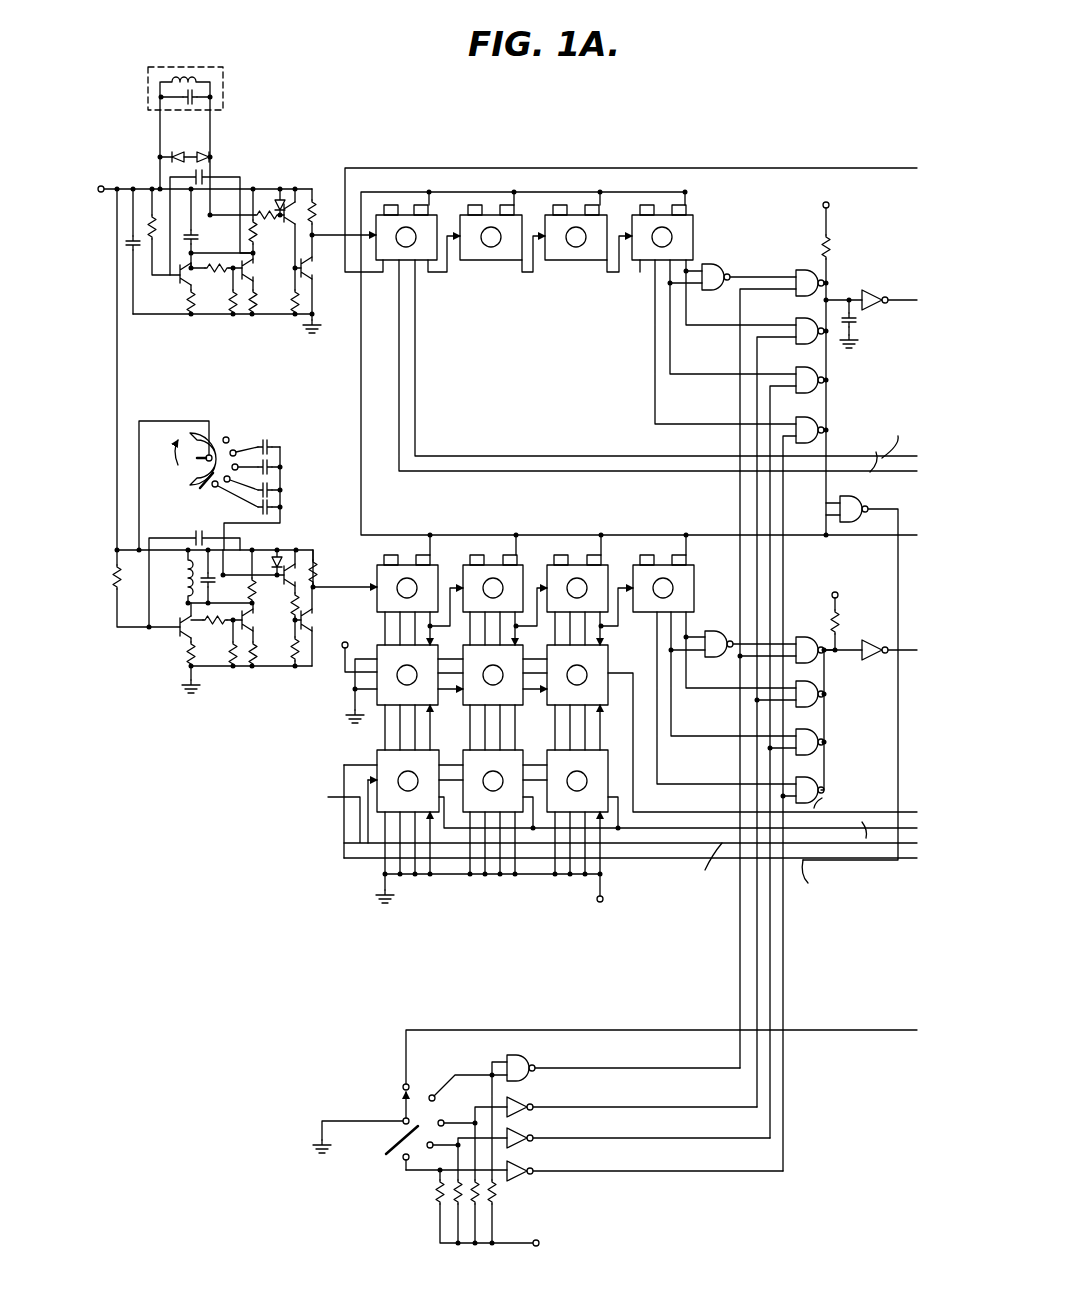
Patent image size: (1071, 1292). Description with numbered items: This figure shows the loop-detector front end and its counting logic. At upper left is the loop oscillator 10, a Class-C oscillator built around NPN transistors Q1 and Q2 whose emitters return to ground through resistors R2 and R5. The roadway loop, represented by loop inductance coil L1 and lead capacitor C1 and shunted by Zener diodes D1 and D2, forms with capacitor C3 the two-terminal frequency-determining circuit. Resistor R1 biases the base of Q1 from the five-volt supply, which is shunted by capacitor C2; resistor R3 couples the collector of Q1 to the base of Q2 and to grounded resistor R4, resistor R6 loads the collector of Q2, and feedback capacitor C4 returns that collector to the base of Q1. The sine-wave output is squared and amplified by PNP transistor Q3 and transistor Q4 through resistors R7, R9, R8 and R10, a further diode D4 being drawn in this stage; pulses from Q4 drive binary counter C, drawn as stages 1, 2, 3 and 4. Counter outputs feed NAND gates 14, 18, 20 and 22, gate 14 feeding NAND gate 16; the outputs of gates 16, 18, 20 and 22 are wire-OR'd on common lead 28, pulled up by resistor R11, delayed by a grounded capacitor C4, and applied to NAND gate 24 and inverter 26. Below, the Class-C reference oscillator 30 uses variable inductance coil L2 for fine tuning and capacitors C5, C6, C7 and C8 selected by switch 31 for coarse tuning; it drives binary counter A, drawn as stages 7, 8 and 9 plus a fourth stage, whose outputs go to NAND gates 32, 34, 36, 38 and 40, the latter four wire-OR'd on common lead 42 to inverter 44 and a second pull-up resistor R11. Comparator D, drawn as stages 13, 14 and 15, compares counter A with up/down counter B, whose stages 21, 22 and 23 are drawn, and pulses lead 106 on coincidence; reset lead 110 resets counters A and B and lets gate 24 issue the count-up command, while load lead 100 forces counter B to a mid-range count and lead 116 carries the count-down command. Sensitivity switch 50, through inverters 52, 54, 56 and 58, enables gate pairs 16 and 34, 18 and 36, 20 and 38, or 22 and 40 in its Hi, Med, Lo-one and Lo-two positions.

The loop oscillator 10 is at (171, 365).
The loop inductance coil L1 is at (182, 76).
The lead capacitor C1 is at (195, 99).
The Zener diode D1 is at (172, 153).
The Zener diode D2 is at (195, 152).
The diode D4 is at (283, 198).
The capacitor C2 is at (128, 240).
The capacitor C3 is at (186, 234).
The feedback capacitor C4 is at (203, 176).
The resistor R1 is at (151, 210).
The grounded resistor R2 is at (188, 312).
The resistor R3 is at (216, 275).
The grounded resistor R4 is at (233, 316).
The grounded resistor R5 is at (253, 316).
The resistor R6 is at (257, 240).
The resistor R7 is at (266, 210).
The grounded resistor R8 is at (296, 316).
The resistor R9 is at (312, 240).
The resistor R10 is at (315, 203).
The resistor R11 is at (830, 252).
The NPN transistor Q1 is at (178, 282).
The NPN transistor Q2 is at (251, 282).
The PNP transistor Q3 is at (296, 206).
The transistor Q4 is at (312, 280).
The switch 31 is at (205, 483).
The capacitor C5 is at (268, 440).
The capacitor C6 is at (268, 462).
The capacitor C7 is at (268, 487).
The capacitor C8 is at (270, 510).
The reference oscillator 30 is at (211, 660).
The inductance coil L2 is at (186, 598).
The reset lead 110 is at (680, 192).
The counter C stage 1 is at (418, 264).
The counter C stage 2 is at (502, 238).
The counter C stage 3 is at (588, 238).
The counter C stage 4 is at (645, 265).
The NAND gate 14 is at (706, 272).
The NAND gate 16 is at (806, 272).
The NAND gate 18 is at (800, 318).
The NAND gate 20 is at (800, 367).
The NAND gate 22 is at (804, 417).
The NAND gate 24 is at (838, 511).
The inverter 26 is at (872, 292).
The common lead 28 is at (828, 415).
The counter A stage 7 is at (444, 560).
The counter A stage 8 is at (505, 600).
The counter A stage 9 is at (590, 600).
The comparator stage 13 is at (470, 740).
The comparator stage 15 is at (720, 728).
The NAND gate 32 is at (722, 658).
The NAND gate 34 is at (810, 638).
The NAND gate 36 is at (791, 687).
The NAND gate 38 is at (797, 734).
The NAND gate 40 is at (803, 726).
The common lead 42 is at (826, 712).
The inverter 44 is at (876, 662).
The up-down counter stage 21 is at (548, 816).
The up-down counter stage 23 is at (497, 814).
The load lead 100 is at (660, 830).
The lead 106 is at (640, 796).
The lead 116 is at (640, 848).
The sensitivity switch 50 is at (390, 1152).
The inverter 52 is at (530, 1062).
The inverter 54 is at (530, 1100).
The inverter 56 is at (530, 1133).
The inverter 58 is at (530, 1166).